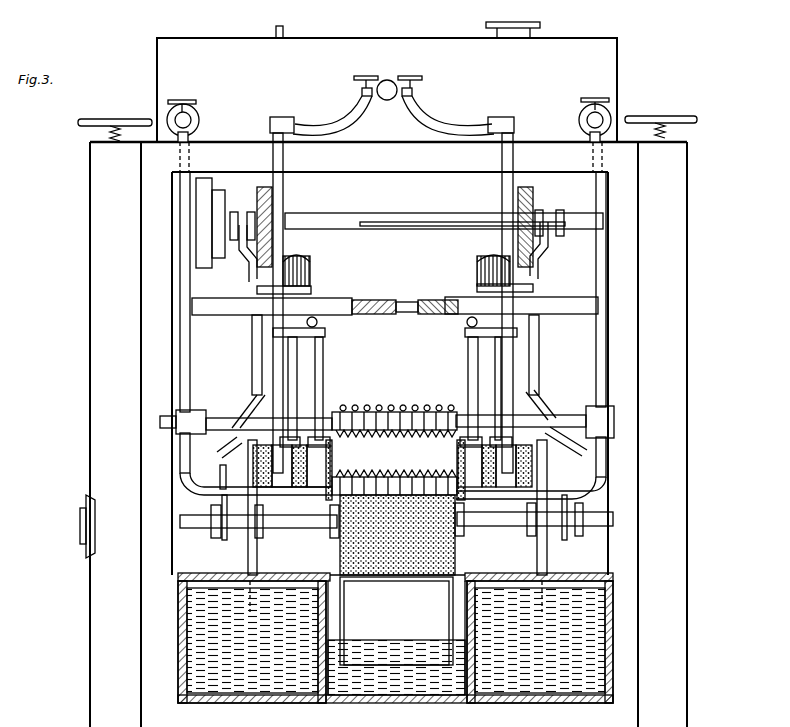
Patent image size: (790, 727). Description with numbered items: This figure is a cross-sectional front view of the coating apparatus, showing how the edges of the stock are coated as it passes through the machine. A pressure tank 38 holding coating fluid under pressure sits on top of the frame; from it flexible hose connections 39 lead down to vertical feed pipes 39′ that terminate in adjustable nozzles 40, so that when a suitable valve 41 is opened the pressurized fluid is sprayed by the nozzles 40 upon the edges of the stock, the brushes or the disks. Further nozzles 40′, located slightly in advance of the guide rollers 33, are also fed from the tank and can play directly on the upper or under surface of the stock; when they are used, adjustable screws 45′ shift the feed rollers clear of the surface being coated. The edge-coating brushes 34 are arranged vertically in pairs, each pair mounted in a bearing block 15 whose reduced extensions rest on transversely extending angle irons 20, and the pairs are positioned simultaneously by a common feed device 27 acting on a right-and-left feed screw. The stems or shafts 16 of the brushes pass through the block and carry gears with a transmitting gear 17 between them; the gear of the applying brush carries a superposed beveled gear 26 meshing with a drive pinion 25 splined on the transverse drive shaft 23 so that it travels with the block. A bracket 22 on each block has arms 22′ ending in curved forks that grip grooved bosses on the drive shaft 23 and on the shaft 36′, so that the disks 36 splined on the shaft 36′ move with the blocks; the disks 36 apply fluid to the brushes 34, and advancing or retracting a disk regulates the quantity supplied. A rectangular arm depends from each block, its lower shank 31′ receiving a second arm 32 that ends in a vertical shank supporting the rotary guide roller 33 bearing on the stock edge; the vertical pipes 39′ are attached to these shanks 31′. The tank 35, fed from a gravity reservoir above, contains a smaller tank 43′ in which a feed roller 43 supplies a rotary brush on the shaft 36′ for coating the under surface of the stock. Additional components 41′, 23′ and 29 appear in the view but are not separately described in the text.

The pressure tank 38 is at (380, 38).
The valve 41 is at (388, 79).
The valve 41′ is at (182, 100).
The adjustable screw 45′ is at (112, 118).
The flexible hose connection 39 is at (345, 123).
The vertical pipe 39′ is at (392, 295).
The adjustable nozzle 40 is at (280, 484).
The nozzle 40′ is at (396, 433).
The drive shaft 23 is at (385, 222).
The plate 23′ is at (206, 178).
The bracket 22 is at (252, 340).
The bracket arm 22′ is at (256, 282).
The drive pinion 25 is at (262, 187).
The beveled gear 26 is at (308, 256).
The transmitting gear 17 is at (477, 268).
The bearing block 15 is at (312, 288).
The platform 29 is at (208, 298).
The angle iron 20 is at (570, 297).
The common feed device 27 is at (372, 300).
The lower shank 31′ is at (326, 332).
The brush stem 16 is at (298, 360).
The second arm 32 is at (324, 382).
The brush 34 is at (395, 452).
The guide roller 33 is at (304, 486).
The disk 36 is at (257, 563).
The disk shaft 36′ is at (272, 528).
The tank 35 is at (258, 693).
The feed roller 43 is at (396, 621).
The tank 43′ is at (400, 698).